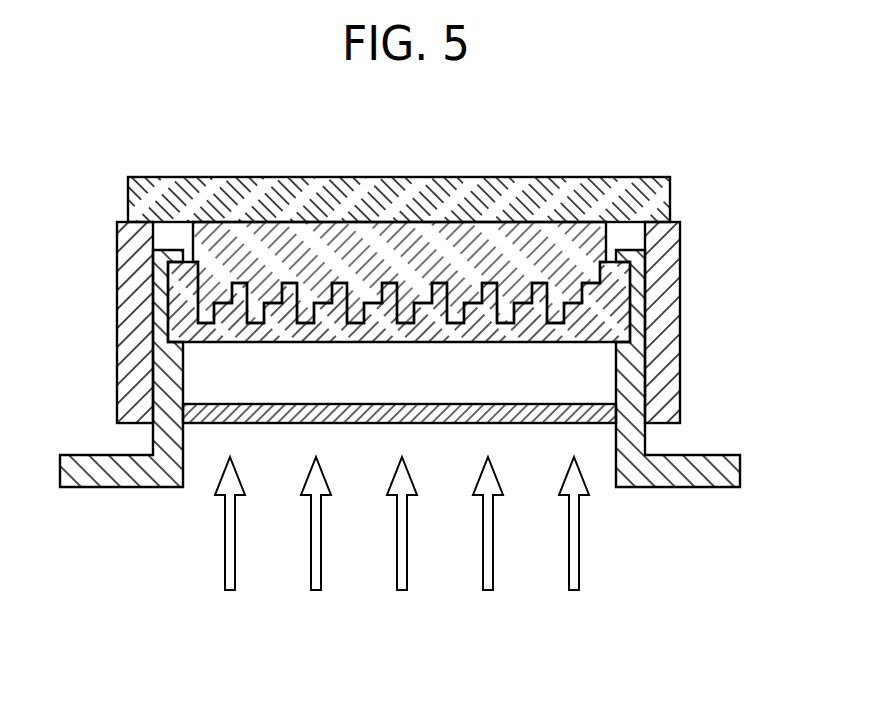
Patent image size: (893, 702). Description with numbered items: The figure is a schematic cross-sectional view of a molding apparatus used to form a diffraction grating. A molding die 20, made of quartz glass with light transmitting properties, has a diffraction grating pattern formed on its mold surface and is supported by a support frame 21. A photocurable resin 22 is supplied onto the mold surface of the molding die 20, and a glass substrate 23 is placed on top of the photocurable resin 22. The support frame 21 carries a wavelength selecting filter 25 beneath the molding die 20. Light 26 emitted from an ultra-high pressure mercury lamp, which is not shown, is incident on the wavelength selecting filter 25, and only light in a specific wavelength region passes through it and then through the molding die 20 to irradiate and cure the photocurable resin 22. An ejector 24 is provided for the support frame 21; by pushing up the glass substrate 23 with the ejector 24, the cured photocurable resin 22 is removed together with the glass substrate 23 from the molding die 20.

The molding die 20 is at (618, 306).
The support frame 21 is at (718, 492).
The photocurable resin 22 is at (580, 233).
The glass substrate 23 is at (670, 199).
The ejector 24 is at (672, 258).
The wavelength selecting filter 25 is at (205, 425).
The light 26 is at (579, 562).